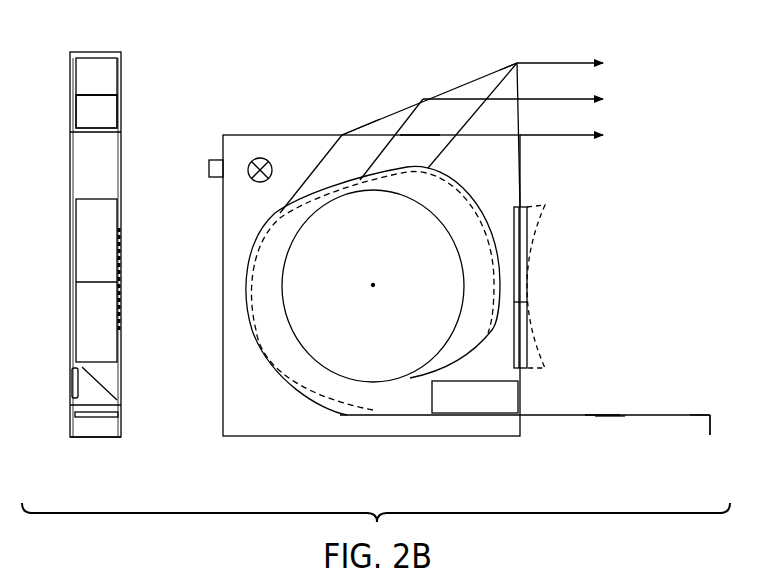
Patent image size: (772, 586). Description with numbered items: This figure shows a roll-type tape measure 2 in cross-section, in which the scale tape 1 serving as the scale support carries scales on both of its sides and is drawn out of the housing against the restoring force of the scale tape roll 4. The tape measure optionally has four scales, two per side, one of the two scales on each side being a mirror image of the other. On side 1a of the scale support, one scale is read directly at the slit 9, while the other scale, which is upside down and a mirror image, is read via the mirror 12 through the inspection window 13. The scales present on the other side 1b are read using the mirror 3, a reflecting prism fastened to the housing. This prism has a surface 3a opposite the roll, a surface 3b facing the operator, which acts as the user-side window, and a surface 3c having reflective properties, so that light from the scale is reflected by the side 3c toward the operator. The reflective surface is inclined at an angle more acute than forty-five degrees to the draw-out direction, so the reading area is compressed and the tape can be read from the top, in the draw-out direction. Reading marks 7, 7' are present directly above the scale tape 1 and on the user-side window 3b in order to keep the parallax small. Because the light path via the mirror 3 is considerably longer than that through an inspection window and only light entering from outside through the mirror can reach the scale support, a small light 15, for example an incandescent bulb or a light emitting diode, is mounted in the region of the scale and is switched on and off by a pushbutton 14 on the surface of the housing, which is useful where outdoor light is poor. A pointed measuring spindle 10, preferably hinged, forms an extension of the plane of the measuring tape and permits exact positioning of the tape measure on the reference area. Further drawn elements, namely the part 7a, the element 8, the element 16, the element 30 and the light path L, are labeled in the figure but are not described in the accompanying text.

The scale tape 1 is at (93, 418).
The side of scale support 1a is at (599, 406).
The side of scale support 1b is at (608, 423).
The roll-type tape measure 2 is at (123, 186).
The mirror 3 is at (70, 73).
The surface opposite the roll 3a is at (420, 134).
The user-side window 3b is at (110, 110).
The reflective surface 3c is at (376, 118).
The scale tape roll 4 is at (331, 272).
The reading mark 7 is at (373, 278).
The reading mark 7' is at (303, 135).
The mirror portion 7a is at (85, 279).
The stop 8 is at (685, 420).
The slit 9 is at (126, 414).
The measuring spindle 10 is at (76, 222).
The mirror 12 is at (113, 388).
The inspection window 13 is at (72, 387).
The pushbutton 14 is at (213, 160).
The small light 15 is at (272, 168).
The detector array 16 is at (121, 328).
The lens 30 is at (544, 228).
The light beam L is at (557, 100).